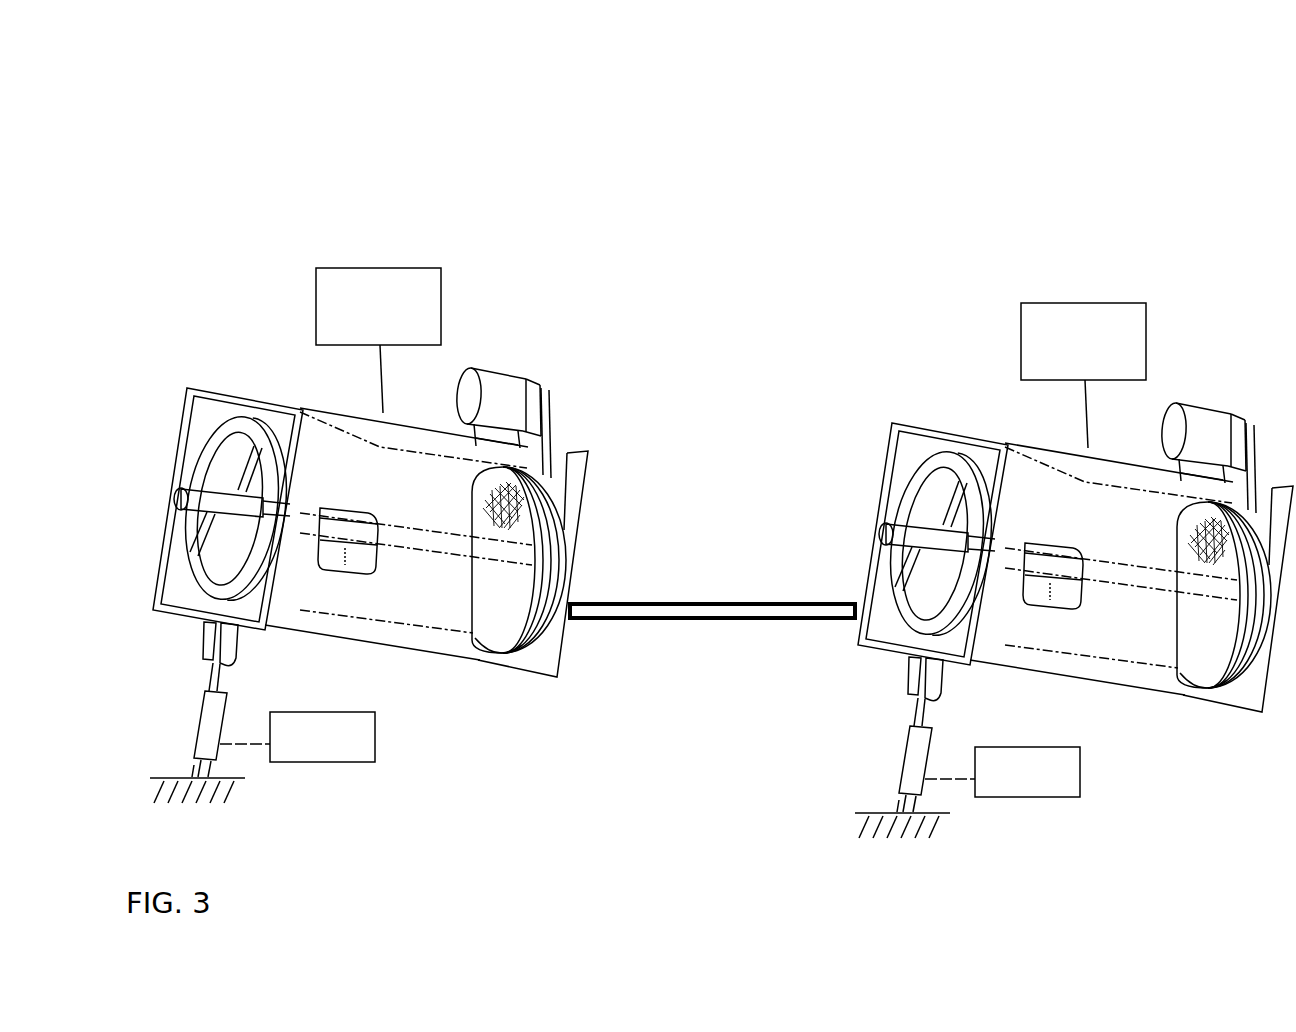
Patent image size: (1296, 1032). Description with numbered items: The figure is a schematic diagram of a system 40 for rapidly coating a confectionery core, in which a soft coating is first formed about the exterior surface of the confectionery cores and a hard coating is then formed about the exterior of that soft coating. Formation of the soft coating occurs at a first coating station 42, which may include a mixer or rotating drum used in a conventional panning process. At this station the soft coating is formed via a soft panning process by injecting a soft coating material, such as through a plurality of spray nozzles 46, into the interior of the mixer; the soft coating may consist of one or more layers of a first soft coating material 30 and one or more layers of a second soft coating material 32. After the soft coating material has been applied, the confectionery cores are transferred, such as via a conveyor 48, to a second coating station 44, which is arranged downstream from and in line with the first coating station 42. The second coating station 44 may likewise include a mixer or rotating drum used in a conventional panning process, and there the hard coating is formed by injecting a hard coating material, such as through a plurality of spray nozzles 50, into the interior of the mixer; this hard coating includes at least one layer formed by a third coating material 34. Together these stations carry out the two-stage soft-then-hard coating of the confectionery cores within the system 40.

The system 40 is at (186, 166).
The first coating station 42 is at (289, 258).
The second coating station 44 is at (962, 304).
The first soft coating material 30 is at (188, 459).
The second soft coating material 32 is at (232, 502).
The third coating material 34 is at (893, 494).
The spray nozzles 46 is at (353, 545).
The conveyor 48 is at (697, 612).
The spray nozzles 50 is at (1101, 666).